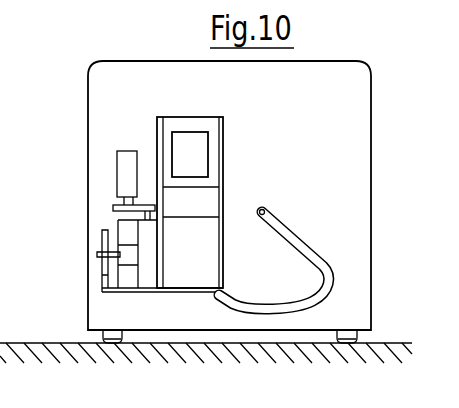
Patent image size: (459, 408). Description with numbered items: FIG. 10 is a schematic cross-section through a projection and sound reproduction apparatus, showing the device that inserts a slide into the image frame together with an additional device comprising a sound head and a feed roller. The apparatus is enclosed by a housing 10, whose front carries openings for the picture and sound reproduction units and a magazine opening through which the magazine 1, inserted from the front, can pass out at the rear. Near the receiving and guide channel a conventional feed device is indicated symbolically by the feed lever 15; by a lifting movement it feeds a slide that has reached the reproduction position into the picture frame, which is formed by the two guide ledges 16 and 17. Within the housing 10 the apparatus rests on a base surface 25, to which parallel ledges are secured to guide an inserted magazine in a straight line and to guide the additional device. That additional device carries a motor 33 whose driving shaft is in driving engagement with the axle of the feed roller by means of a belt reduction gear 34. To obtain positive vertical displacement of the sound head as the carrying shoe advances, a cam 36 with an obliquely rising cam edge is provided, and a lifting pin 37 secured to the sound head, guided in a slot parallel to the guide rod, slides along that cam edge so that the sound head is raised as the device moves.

The magazine 1 is at (209, 230).
The housing 10 is at (213, 186).
The feed lever 15 is at (310, 260).
The guide ledge 16 is at (139, 194).
The guide ledge 17 is at (223, 152).
The base surface 25 is at (169, 343).
The motor 33 is at (93, 178).
The belt reduction gear 34 is at (102, 209).
The cam 36 is at (79, 256).
The lifting pin 37 is at (86, 267).